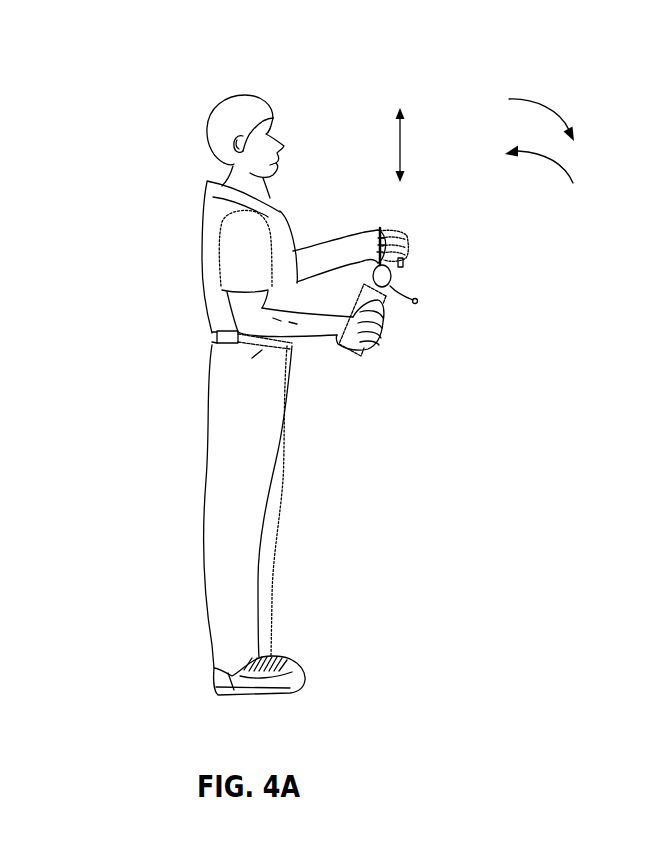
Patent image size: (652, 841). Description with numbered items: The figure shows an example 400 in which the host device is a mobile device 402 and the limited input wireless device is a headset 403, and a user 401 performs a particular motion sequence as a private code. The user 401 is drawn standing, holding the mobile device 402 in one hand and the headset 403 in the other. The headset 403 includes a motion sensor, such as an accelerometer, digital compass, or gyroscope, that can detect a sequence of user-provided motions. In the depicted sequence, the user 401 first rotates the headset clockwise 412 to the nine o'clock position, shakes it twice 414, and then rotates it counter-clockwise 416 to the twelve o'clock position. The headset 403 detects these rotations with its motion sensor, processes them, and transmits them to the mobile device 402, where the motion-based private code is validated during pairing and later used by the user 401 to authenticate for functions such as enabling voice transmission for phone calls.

The example 400 is at (172, 77).
The user 401 is at (182, 312).
The mobile device 402 is at (362, 356).
The headset 403 is at (393, 286).
The rotate clockwise 412 is at (550, 82).
The shake twice 414 is at (397, 120).
The rotate counter-clockwise 416 is at (542, 208).